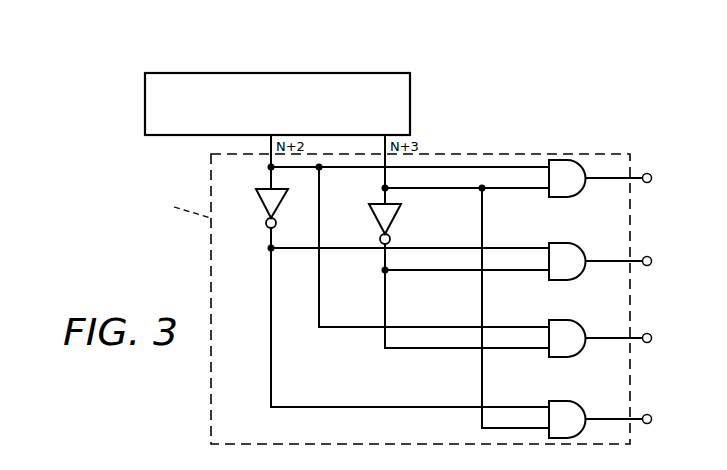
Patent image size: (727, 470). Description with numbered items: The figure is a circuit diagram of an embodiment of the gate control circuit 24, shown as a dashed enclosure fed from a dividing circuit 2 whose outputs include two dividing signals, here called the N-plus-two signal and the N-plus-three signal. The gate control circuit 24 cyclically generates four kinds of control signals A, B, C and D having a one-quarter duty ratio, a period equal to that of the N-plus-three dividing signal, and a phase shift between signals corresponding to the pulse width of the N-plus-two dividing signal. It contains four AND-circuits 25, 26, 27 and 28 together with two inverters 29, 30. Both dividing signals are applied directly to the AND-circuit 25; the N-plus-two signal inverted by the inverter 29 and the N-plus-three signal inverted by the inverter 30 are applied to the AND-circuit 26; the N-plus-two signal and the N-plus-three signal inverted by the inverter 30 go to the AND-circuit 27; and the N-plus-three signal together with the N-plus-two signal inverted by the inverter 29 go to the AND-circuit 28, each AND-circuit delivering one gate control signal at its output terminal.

The dividing circuit 2 is at (373, 73).
The gate control circuit 24 is at (503, 154).
The AND-circuit 25 is at (568, 160).
The AND-circuit 26 is at (568, 243).
The AND-circuit 27 is at (568, 320).
The AND-circuit 28 is at (568, 401).
The inverter 29 is at (264, 205).
The inverter 30 is at (395, 216).